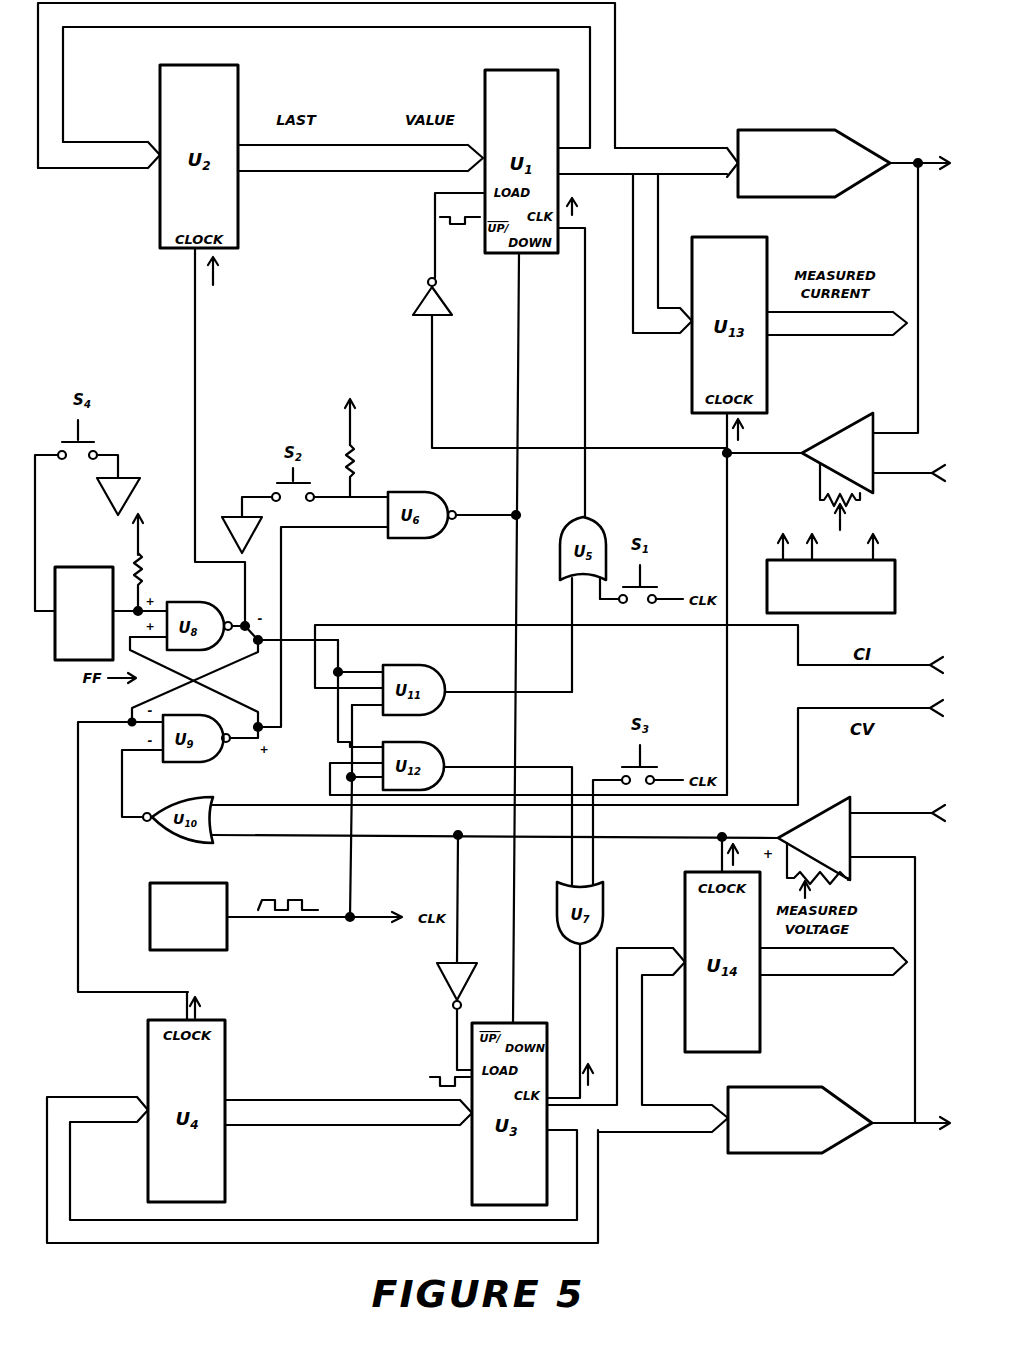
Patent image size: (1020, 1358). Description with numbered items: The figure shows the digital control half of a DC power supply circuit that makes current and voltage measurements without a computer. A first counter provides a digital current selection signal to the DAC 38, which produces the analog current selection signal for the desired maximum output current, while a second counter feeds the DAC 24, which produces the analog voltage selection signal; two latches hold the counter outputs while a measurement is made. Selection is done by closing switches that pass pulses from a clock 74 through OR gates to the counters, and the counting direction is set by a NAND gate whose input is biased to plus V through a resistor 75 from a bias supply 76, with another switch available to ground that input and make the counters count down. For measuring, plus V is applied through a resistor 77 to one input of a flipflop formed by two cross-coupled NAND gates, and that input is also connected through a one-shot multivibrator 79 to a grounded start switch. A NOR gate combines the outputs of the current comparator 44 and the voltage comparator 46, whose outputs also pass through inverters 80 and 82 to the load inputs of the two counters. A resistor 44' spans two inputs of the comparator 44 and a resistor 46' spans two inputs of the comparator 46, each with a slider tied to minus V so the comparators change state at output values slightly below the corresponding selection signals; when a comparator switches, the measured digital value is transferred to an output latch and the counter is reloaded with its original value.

The DAC 38 is at (825, 198).
The inverter 80 is at (436, 320).
The resistor 75 is at (360, 462).
The resistor 77 is at (148, 580).
The one-shot multivibrator 79 is at (75, 567).
The current comparator 44 is at (830, 452).
The resistor 44' is at (869, 510).
The bias supply 76 is at (903, 588).
The clock 74 is at (208, 884).
The inverter 82 is at (440, 988).
The DAC 24 is at (826, 1087).
The voltage comparator 46 is at (839, 833).
The resistor 46' is at (842, 872).